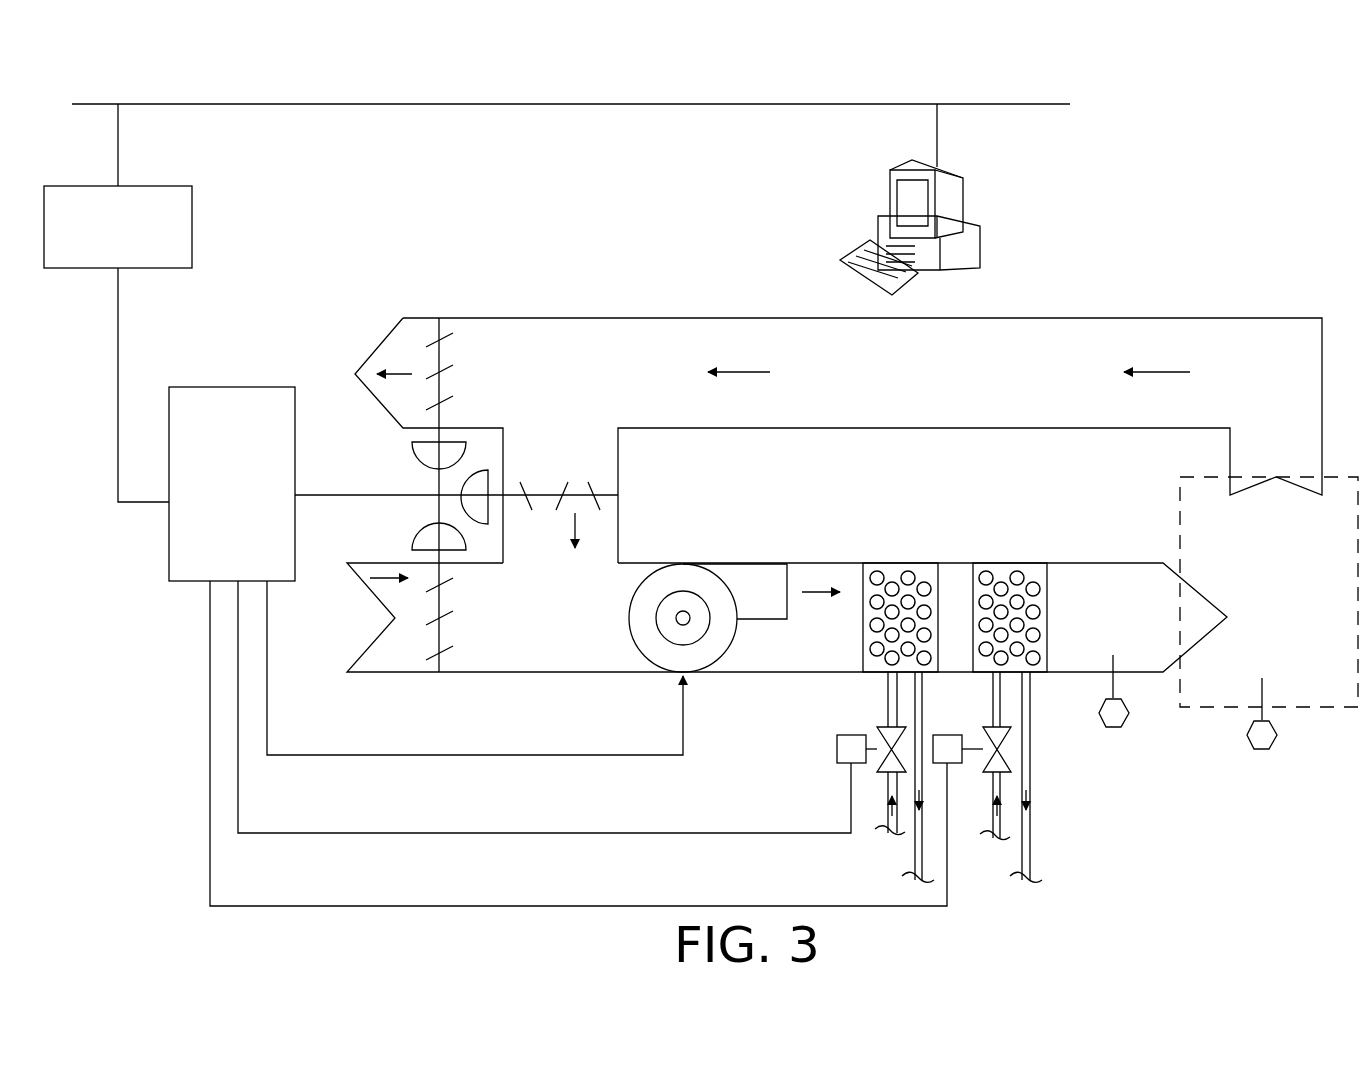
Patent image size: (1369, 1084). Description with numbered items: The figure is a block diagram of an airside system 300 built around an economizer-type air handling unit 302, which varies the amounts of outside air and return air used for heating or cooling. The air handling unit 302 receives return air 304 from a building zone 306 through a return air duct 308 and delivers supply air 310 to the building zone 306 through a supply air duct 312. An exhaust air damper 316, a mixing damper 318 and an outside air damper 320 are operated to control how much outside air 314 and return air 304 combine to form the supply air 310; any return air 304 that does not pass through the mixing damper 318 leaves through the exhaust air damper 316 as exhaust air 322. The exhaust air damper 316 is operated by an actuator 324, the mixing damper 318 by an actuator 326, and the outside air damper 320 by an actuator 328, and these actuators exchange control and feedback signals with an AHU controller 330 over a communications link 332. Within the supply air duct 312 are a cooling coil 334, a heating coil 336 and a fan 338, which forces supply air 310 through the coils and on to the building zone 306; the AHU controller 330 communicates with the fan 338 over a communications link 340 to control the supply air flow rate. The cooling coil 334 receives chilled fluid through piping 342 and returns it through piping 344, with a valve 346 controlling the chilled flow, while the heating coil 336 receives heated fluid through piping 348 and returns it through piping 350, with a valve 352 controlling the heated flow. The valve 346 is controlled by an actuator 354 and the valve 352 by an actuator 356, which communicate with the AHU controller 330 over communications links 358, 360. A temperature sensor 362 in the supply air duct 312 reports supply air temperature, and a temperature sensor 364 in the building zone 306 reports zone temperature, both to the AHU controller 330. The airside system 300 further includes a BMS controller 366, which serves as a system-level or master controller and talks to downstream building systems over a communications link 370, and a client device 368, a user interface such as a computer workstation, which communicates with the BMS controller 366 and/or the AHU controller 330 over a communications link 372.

The airside system 300 is at (478, 76).
The air handling unit 302 is at (1162, 206).
The return air 304 is at (1283, 392).
The building zone 306 is at (1333, 690).
The return air duct 308 is at (1182, 318).
The supply air 310 is at (1135, 582).
The supply air duct 312 is at (1084, 563).
The outside air 314 is at (332, 660).
The exhaust air damper 316 is at (446, 356).
The mixing damper 318 is at (618, 484).
The outside air damper 320 is at (442, 636).
The exhaust air 322 is at (343, 330).
The actuator 324 is at (460, 448).
The actuator 326 is at (486, 482).
The actuator 328 is at (420, 546).
The AHU controller 330 is at (206, 388).
The communications link 332 is at (352, 494).
The cooling coil 334 is at (892, 568).
The heating coil 336 is at (1000, 568).
The fan 338 is at (728, 636).
The communications link 340 is at (491, 755).
The piping 342 is at (888, 696).
The piping 344 is at (915, 858).
The valve 346 is at (878, 728).
The piping 348 is at (993, 696).
The piping 350 is at (1030, 845).
The valve 352 is at (984, 728).
The actuator 354 is at (842, 758).
The actuator 356 is at (955, 757).
The communications link 358 is at (590, 833).
The communications link 360 is at (642, 906).
The temperature sensor 362 is at (1113, 728).
The temperature sensor 364 is at (1261, 750).
The BMS controller 366 is at (192, 232).
The client device 368 is at (955, 193).
The communications link 370 is at (118, 432).
The communications link 372 is at (232, 104).